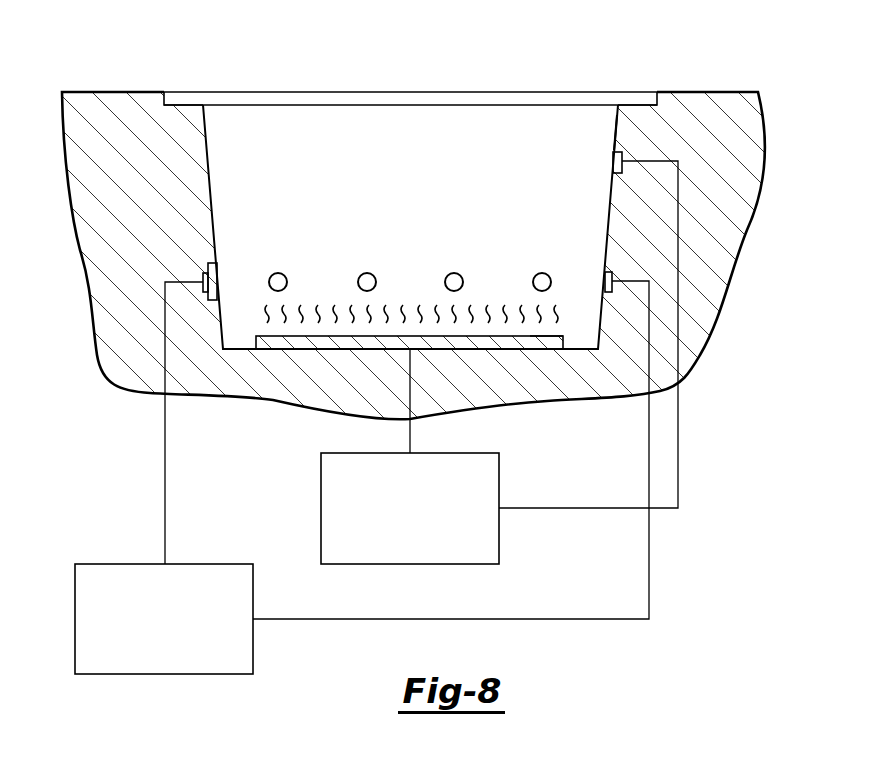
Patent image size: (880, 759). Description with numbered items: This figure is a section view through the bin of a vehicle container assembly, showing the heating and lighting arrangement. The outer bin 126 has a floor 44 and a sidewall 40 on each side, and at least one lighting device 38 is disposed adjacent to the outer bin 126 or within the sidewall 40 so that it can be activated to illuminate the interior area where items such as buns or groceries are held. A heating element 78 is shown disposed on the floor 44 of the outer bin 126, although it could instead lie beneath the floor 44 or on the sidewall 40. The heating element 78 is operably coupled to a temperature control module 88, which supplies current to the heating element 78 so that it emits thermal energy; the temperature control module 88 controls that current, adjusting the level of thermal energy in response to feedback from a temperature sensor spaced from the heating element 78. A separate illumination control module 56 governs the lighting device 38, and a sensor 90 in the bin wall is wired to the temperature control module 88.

The sidewall 40 is at (205, 148).
The outer bin 126 is at (616, 142).
The sensor 90 is at (623, 160).
The lighting device 38 is at (372, 273).
The floor 44 is at (297, 348).
The heating element 78 is at (538, 343).
The temperature control module 88 is at (499, 538).
The illumination control module 56 is at (109, 564).